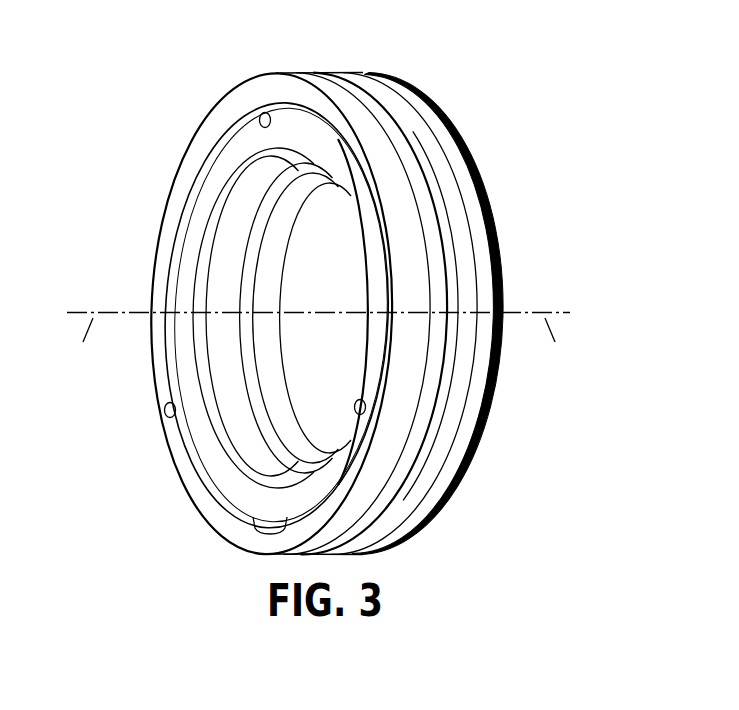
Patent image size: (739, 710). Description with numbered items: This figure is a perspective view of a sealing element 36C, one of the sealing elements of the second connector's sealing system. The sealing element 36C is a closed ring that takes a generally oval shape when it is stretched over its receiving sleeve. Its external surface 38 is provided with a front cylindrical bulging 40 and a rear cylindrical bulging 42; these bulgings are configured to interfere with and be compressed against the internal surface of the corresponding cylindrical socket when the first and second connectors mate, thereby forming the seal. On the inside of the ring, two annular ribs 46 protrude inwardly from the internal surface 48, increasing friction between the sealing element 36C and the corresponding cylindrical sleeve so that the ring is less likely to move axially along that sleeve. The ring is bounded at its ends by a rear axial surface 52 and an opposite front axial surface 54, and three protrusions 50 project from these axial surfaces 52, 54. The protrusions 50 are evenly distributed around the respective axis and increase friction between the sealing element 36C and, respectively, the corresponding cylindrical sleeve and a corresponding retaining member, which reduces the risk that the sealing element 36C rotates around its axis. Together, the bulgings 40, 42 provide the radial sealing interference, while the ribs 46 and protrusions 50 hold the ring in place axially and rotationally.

The sealing element 36C is at (140, 79).
The external surface 38 is at (293, 93).
The front cylindrical bulging 40 is at (482, 254).
The rear cylindrical bulging 42 is at (438, 220).
The annular ribs 46 is at (257, 235).
The internal surface 48 is at (180, 288).
The protrusions 50 is at (265, 115).
The rear axial surface 52 is at (283, 348).
The front axial surface 54 is at (192, 457).